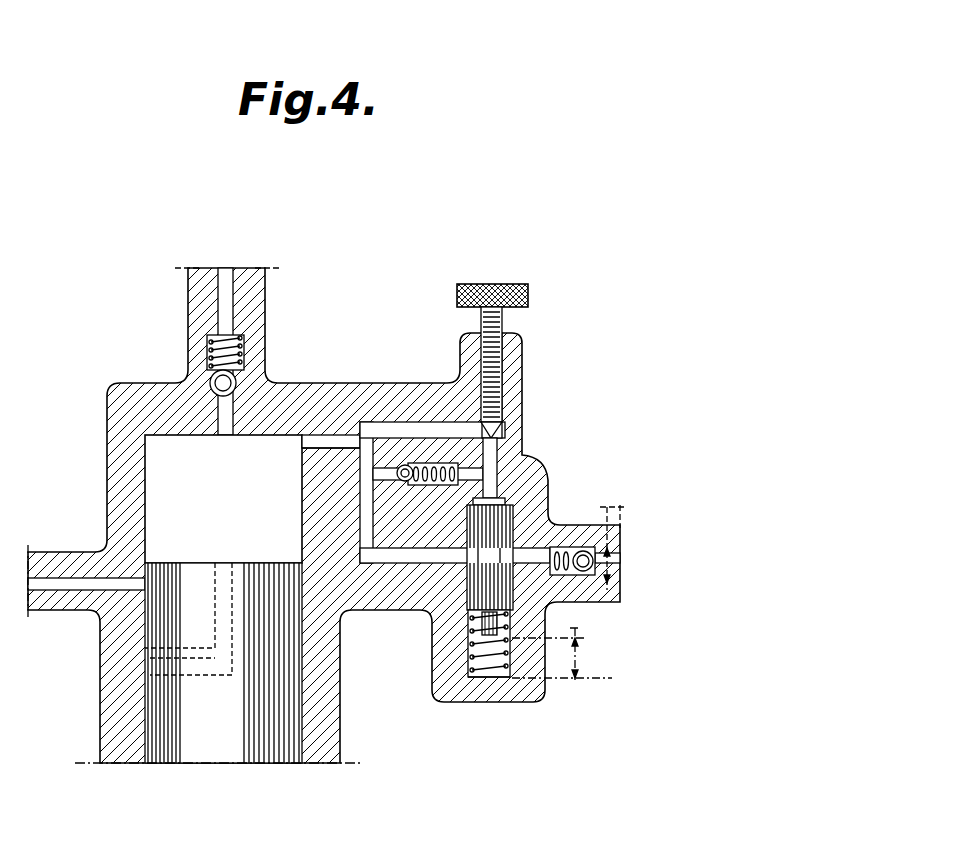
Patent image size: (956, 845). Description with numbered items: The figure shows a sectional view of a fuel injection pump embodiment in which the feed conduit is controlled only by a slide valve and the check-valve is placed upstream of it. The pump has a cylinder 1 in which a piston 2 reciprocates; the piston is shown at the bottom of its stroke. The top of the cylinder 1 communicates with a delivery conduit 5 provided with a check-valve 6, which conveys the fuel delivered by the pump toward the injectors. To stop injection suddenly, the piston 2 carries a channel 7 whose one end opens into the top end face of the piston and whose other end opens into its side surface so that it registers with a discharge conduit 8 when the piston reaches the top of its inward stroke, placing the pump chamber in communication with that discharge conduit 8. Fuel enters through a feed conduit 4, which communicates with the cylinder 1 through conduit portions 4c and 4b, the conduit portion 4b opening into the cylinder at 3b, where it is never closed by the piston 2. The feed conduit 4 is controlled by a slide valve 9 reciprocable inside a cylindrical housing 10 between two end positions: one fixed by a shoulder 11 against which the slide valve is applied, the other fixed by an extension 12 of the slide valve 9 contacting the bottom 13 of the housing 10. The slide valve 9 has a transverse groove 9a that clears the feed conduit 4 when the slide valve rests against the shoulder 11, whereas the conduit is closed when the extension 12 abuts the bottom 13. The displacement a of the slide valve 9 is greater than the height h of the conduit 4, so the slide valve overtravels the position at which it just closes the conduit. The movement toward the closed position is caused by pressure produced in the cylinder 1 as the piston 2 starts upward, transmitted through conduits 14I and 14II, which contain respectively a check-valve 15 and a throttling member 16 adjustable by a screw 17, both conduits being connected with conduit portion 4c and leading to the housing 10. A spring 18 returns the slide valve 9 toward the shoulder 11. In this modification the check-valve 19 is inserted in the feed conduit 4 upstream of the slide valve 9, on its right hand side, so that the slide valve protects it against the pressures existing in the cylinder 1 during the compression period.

The cylinder 1 is at (152, 628).
The piston 2 is at (182, 697).
The opening of conduit portion 4b into cylinder 3b is at (302, 442).
The feed conduit 4 is at (612, 562).
The conduit portion 4b is at (322, 447).
The conduit portion 4c is at (368, 512).
The delivery conduit 5 is at (226, 288).
The check-valve 6 is at (240, 379).
The channel 7 is at (150, 652).
The discharge conduit 8 is at (80, 583).
The slide valve 9 is at (508, 558).
The transverse channel or groove 9a is at (526, 548).
The cylindrical housing 10 is at (472, 631).
The shoulder 11 is at (515, 515).
The extension 12 is at (497, 622).
The bottom 13 is at (488, 678).
The conduit 14I is at (380, 466).
The conduit 14II is at (433, 430).
The check-valve 15 is at (410, 464).
The throttling member 16 is at (505, 438).
The screw 17 is at (503, 319).
The spring 18 is at (470, 656).
The check-valve 19 is at (585, 572).
The height of conduit h is at (613, 537).
The displacement of slide valve a is at (562, 654).